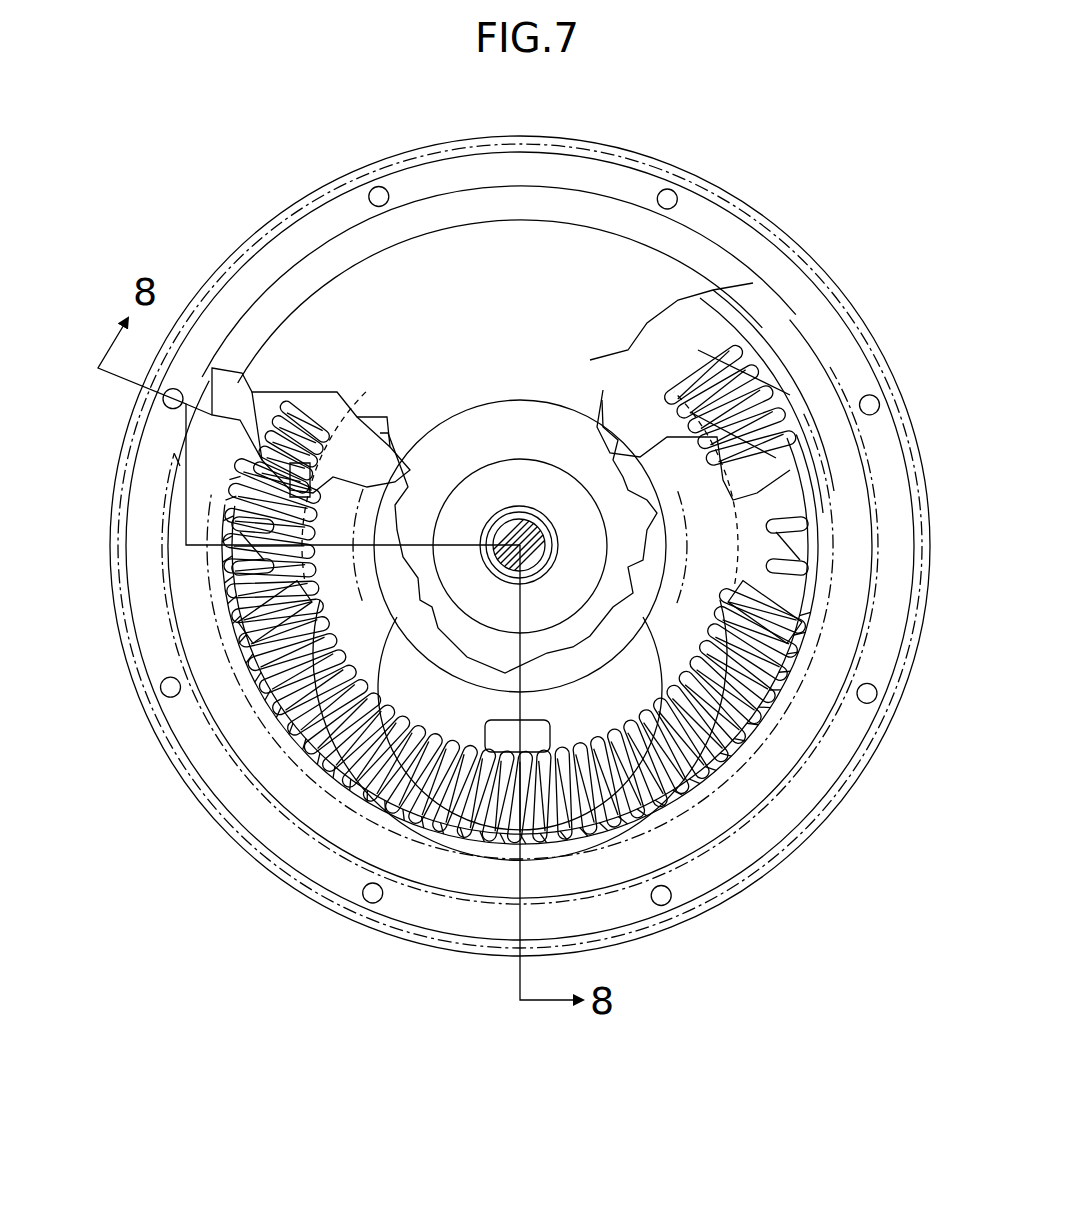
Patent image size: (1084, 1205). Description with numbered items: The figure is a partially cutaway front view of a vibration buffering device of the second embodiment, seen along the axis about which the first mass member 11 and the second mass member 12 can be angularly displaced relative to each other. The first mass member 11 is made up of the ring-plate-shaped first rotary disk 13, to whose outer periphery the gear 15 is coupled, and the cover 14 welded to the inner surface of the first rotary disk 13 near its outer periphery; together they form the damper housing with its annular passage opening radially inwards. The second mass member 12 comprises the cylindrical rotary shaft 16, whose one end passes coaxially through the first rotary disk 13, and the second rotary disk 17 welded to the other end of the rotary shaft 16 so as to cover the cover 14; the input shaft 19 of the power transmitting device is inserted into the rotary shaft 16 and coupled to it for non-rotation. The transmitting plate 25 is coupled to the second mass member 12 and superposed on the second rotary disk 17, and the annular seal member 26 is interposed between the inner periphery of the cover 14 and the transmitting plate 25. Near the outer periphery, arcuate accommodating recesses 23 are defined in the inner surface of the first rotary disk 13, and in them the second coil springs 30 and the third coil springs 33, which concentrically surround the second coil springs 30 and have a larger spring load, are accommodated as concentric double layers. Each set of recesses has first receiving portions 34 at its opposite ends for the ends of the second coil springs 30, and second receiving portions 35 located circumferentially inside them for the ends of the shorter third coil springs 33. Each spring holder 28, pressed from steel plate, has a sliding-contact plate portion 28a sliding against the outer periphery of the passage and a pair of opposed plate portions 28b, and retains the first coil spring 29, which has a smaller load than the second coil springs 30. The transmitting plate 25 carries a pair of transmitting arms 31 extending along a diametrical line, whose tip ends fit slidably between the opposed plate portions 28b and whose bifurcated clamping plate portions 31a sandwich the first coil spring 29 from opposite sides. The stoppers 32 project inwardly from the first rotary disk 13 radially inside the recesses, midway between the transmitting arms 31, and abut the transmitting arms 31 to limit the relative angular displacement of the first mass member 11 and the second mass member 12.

The first mass member 11 is at (388, 156).
The second mass member 12 is at (630, 196).
The first rotary disk 13 is at (456, 882).
The cover 14 is at (380, 433).
The gear 15 is at (521, 140).
The rotary shaft 16 is at (525, 473).
The second rotary disk 17 is at (549, 243).
The input shaft 19 is at (546, 522).
The accommodating recesses 23 is at (713, 413).
The transmitting plate 25 is at (434, 652).
The annular seal member 26 is at (392, 466).
The spring holder 28 is at (810, 420).
The sliding-contact plate portion 28a is at (323, 440).
The opposed plate portions 28b is at (345, 445).
The first coil spring 29 is at (233, 550).
The second coil springs 30 is at (890, 738).
The transmitting arms 31 is at (385, 630).
The clamping plate portions 31a is at (700, 437).
The stoppers 32 is at (538, 732).
The third coil springs 33 is at (700, 478).
The first receiving portions 34 is at (800, 460).
The second receiving portions 35 is at (700, 405).